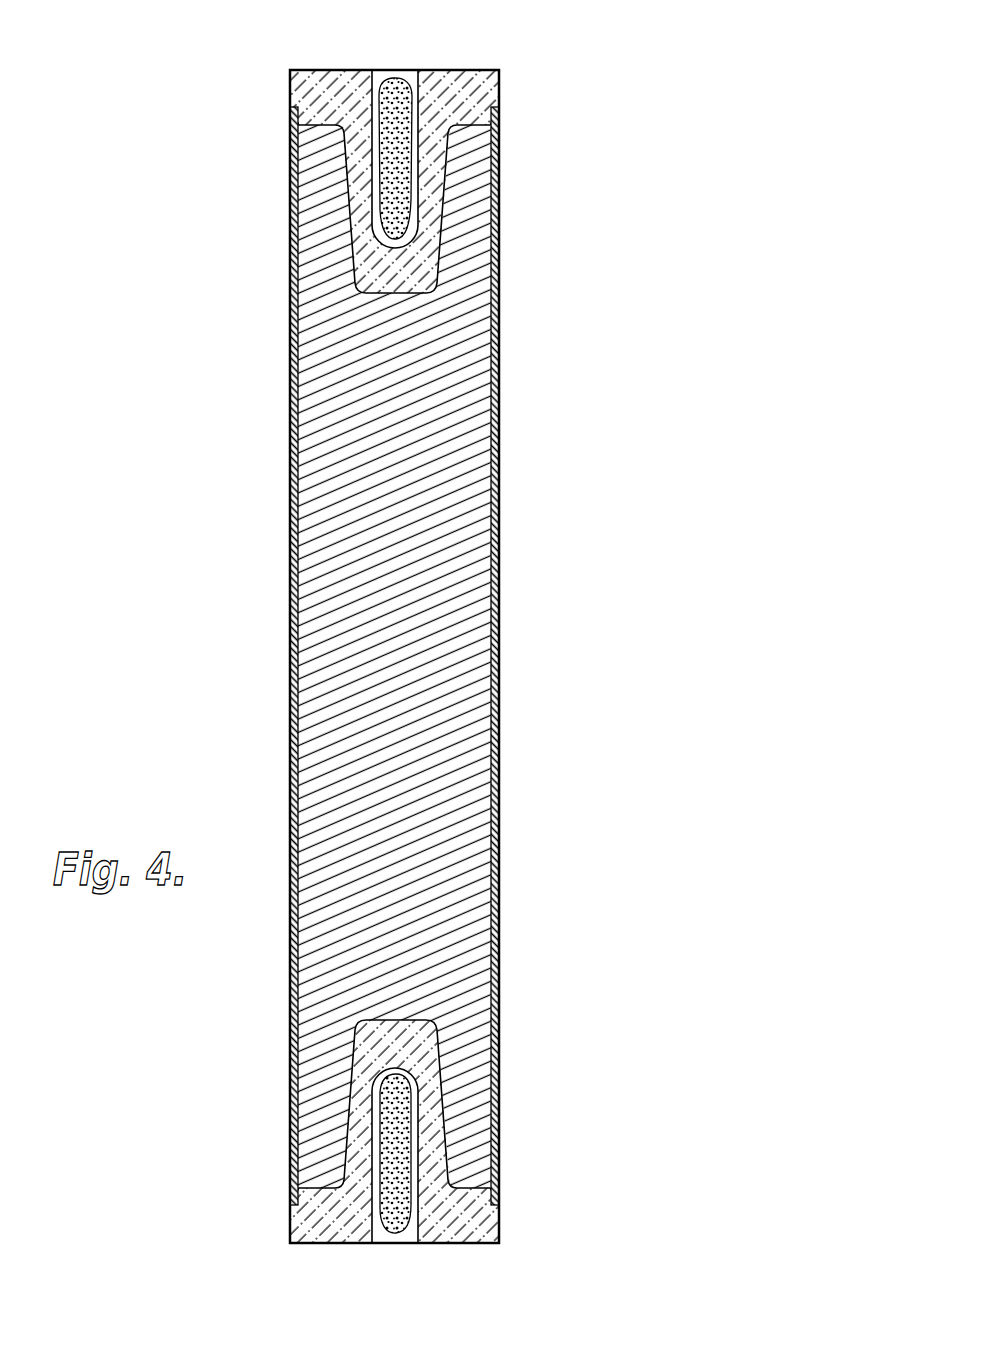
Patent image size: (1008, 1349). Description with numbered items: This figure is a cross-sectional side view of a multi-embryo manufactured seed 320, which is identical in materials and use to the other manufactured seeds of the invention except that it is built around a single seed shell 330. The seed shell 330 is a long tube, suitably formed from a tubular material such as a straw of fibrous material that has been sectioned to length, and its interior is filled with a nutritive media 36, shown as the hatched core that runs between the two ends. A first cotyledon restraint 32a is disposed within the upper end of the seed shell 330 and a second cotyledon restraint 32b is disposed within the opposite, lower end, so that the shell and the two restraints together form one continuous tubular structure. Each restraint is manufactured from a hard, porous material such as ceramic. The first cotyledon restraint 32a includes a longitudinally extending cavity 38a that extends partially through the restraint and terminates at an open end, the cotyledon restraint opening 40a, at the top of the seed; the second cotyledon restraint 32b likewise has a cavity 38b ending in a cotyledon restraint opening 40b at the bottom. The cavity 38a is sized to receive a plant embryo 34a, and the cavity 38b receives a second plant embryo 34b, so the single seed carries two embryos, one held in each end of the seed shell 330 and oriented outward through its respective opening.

The manufactured seed 320 is at (550, 590).
The seed shell 330 is at (500, 390).
The nutritive media 36 is at (297, 372).
The cotyledon restraint 32a is at (445, 242).
The cotyledon restraint 32b is at (445, 1142).
The embryo 34a is at (405, 172).
The embryo 34b is at (400, 1208).
The cavity 38a is at (370, 103).
The cavity 38b is at (372, 1208).
The cotyledon restraint opening 40a is at (418, 70).
The cotyledon restraint opening 40b is at (410, 1243).